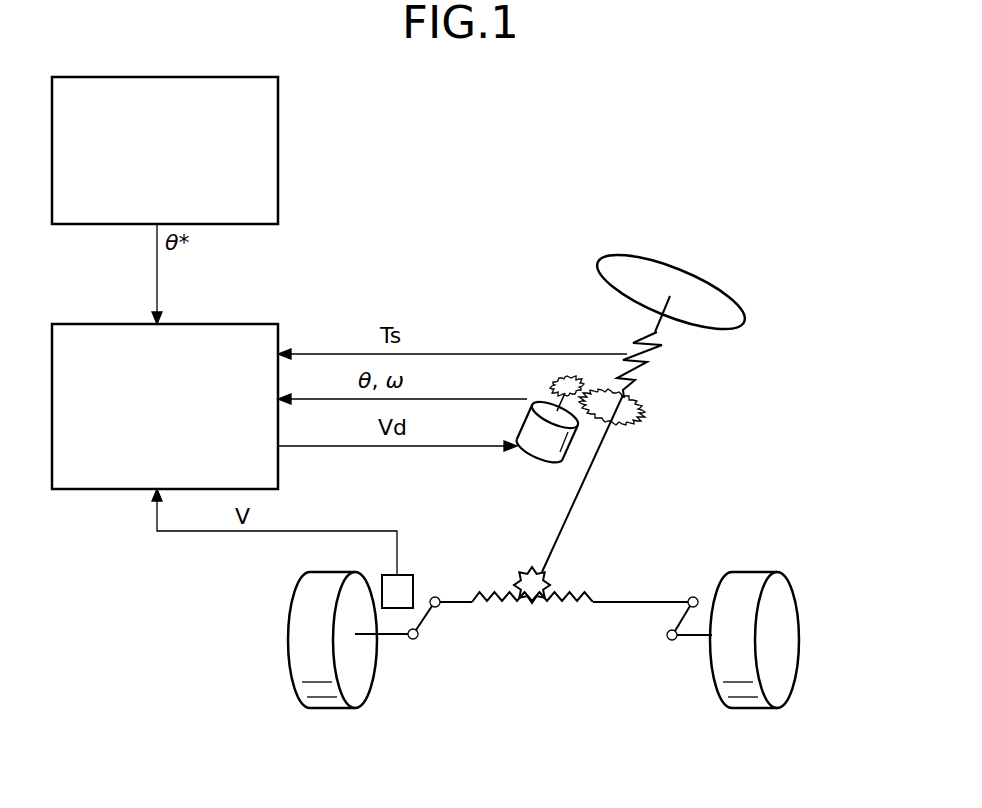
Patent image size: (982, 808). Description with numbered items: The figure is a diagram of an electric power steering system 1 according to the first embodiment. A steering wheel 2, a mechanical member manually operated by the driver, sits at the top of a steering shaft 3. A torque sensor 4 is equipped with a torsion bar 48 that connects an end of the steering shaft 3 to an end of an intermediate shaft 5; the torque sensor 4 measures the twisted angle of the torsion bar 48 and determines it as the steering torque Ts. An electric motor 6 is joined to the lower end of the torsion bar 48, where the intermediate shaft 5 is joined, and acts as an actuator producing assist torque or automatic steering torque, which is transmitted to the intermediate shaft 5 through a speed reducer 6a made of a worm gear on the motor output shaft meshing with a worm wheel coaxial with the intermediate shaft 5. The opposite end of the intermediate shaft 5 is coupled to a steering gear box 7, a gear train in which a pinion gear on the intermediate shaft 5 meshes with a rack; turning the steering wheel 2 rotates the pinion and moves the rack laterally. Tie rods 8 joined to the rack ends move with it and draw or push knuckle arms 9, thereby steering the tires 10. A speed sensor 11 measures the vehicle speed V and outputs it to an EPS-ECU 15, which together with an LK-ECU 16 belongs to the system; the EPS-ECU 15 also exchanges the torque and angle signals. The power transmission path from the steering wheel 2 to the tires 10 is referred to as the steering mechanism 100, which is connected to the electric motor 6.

The electric power steering system 1 is at (689, 177).
The steering wheel 2 is at (745, 291).
The steering shaft 3 is at (653, 318).
The torque sensor 4 is at (690, 386).
The intermediate shaft 5 is at (590, 465).
The electric motor 6 is at (528, 458).
The speed reducer 6a is at (652, 407).
The steering gear box 7 is at (561, 578).
The tie rods 8 is at (461, 608).
The knuckle arms 9 is at (401, 642).
The tires 10 is at (290, 632).
The speed sensor 11 is at (408, 575).
The EPS-ECU 15 is at (237, 324).
The LK-ECU 16 is at (278, 106).
The torsion bar 48 is at (655, 352).
The steering mechanism 100 is at (551, 305).